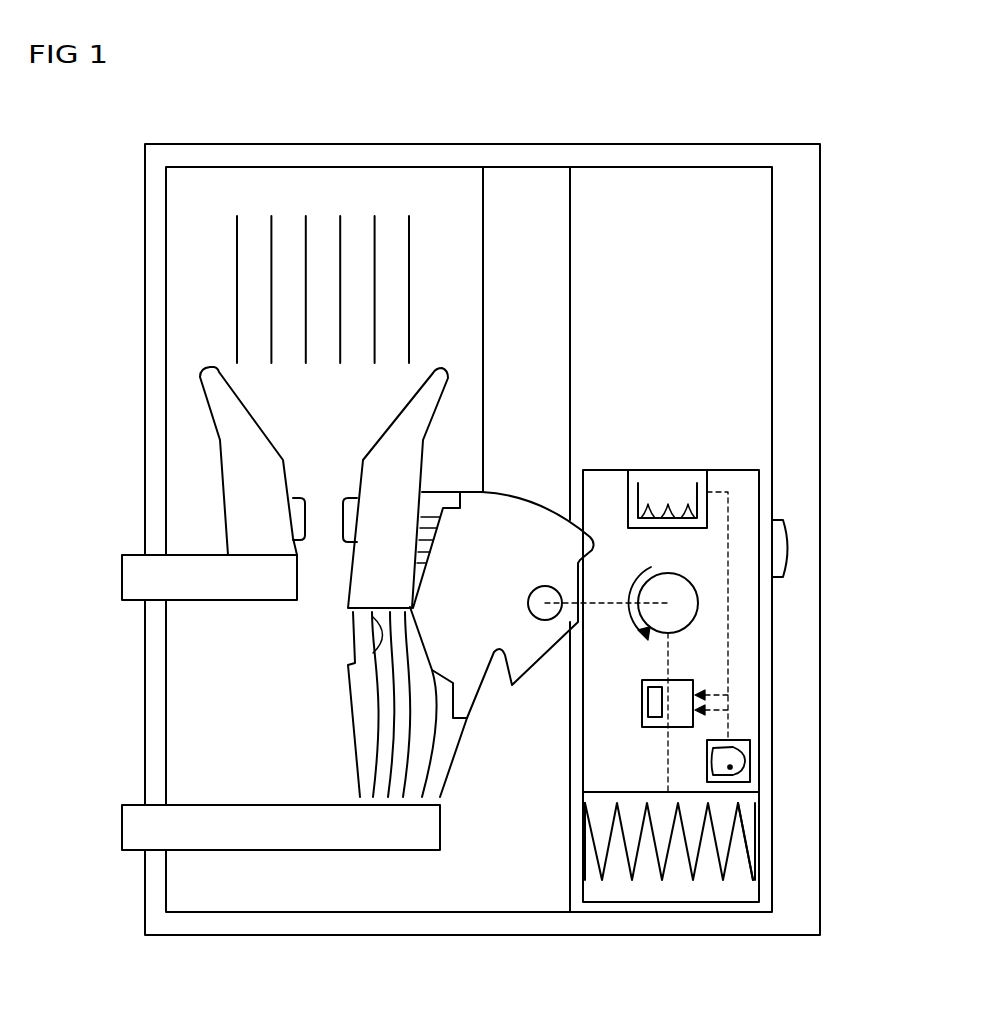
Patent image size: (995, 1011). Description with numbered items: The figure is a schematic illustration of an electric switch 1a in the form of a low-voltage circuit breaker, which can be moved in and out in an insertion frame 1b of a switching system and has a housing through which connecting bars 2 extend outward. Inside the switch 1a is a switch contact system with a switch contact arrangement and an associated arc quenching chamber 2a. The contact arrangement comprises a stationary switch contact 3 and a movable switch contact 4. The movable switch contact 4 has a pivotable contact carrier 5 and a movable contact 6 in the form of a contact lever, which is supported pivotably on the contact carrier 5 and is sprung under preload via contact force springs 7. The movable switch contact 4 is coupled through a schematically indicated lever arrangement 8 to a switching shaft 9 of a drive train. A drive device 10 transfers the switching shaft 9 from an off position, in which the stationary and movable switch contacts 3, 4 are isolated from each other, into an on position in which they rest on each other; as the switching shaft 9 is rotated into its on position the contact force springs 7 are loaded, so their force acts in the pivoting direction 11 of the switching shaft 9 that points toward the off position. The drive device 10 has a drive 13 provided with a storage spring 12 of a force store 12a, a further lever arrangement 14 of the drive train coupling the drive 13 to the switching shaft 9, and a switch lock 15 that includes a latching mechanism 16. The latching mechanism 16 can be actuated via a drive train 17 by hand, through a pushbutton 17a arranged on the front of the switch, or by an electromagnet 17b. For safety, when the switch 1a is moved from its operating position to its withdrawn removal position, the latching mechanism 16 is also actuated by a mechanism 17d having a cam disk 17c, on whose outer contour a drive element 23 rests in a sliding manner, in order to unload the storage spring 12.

The electric switch 1a is at (166, 220).
The insertion frame 1b is at (822, 292).
The connecting bars 2 is at (122, 580).
The arc quenching chamber 2a is at (212, 283).
The stationary switch contact 3 is at (218, 398).
The movable switch contact 4 is at (327, 652).
The contact carrier 5 is at (473, 688).
The movable contact 6 is at (432, 398).
The contact force springs 7 is at (436, 510).
The lever arrangement 8 is at (605, 603).
The switching shaft 9 is at (680, 587).
The drive device 10 is at (604, 478).
The pivoting direction 11 is at (648, 567).
The storage spring 12 is at (697, 873).
The force store 12a is at (738, 872).
The drive 13 is at (617, 883).
The further lever arrangement 14 is at (667, 752).
The switch lock 15 is at (687, 680).
The latching mechanism 16 is at (650, 708).
The drive train 17 is at (730, 655).
The pushbutton 17a is at (790, 548).
The electromagnet 17b is at (667, 500).
The cam disk 17c is at (737, 763).
The mechanism 17d is at (748, 757).
The drive element 23 is at (735, 750).